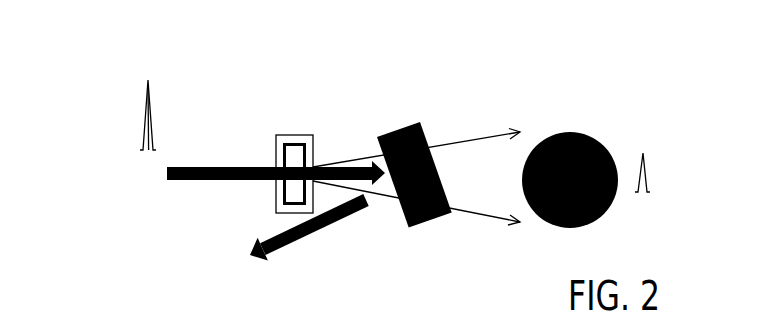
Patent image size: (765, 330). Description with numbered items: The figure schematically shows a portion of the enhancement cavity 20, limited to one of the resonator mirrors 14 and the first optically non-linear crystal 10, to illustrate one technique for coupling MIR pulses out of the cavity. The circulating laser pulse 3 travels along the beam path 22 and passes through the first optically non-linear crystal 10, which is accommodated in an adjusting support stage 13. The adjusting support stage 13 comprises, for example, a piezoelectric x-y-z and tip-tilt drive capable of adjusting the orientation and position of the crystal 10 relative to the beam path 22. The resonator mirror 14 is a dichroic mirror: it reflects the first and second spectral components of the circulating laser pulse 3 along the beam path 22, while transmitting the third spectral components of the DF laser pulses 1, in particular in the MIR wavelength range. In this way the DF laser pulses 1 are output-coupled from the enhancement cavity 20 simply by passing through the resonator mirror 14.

The DF laser pulses 1 is at (553, 227).
The circulating laser pulse 3 is at (145, 127).
The first optically non-linear crystal 10 is at (287, 193).
The adjusting support stage 13 is at (278, 160).
The resonator mirror 14 is at (410, 227).
The enhancement cavity 20 is at (176, 263).
The beam path 22 is at (192, 180).